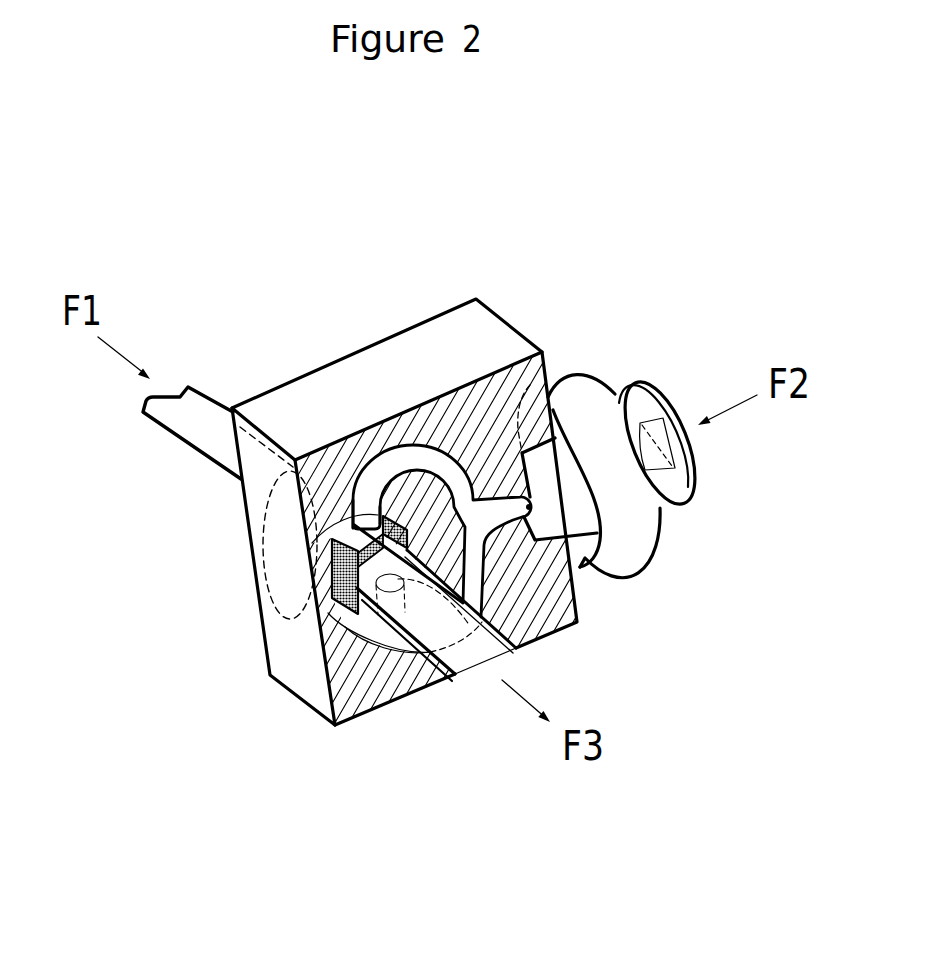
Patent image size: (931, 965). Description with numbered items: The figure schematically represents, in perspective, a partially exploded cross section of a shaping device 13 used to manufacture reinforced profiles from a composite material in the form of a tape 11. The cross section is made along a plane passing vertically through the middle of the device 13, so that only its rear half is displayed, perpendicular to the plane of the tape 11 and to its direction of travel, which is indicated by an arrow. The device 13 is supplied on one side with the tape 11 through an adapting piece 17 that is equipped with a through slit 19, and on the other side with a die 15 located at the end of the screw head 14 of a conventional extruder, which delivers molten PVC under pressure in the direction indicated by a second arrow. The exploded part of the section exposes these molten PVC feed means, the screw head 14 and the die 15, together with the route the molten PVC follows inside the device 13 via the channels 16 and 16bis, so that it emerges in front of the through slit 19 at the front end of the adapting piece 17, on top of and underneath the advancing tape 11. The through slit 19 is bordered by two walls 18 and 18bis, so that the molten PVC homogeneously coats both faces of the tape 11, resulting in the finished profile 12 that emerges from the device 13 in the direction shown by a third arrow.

The tape 11 is at (202, 410).
The profile 12 is at (465, 658).
The shaping device 13 is at (443, 330).
The screw head 14 is at (663, 418).
The die 15 is at (582, 540).
The channel 16 is at (403, 463).
The channel 16bis is at (405, 648).
The adapting piece 17 is at (284, 542).
The wall 18 is at (330, 578).
The wall 18bis is at (338, 615).
The through slit 19 is at (368, 497).